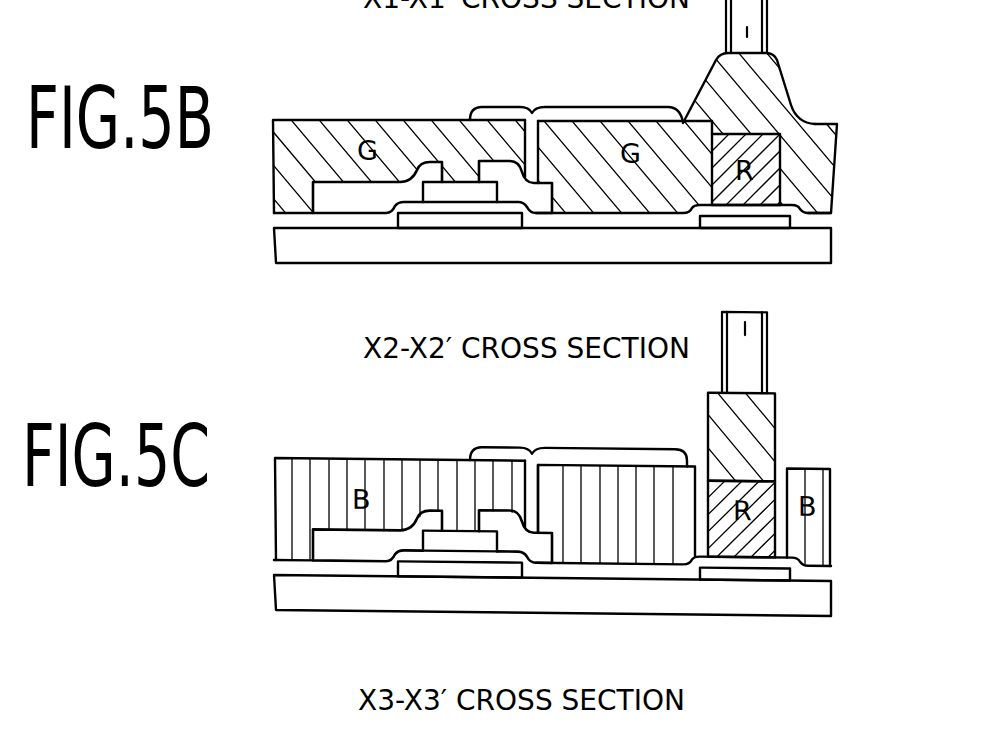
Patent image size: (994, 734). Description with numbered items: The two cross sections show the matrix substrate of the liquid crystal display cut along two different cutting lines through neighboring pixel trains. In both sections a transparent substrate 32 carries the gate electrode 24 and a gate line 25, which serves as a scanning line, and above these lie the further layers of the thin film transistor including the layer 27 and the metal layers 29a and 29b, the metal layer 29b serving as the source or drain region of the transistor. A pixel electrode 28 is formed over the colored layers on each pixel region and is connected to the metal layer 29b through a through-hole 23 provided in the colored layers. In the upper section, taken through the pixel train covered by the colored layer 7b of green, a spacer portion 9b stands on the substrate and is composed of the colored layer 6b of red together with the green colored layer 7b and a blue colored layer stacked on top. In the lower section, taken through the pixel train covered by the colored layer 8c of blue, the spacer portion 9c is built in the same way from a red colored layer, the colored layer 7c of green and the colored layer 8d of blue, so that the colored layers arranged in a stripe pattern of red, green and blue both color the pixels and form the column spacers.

In FIG. 5B, the through-hole 23 is at (535, 152).
In FIG. 5C, the through-hole 23 is at (540, 490).
In FIG. 5B, the gate electrode 24 is at (420, 222).
In FIG. 5C, the gate electrode 24 is at (420, 570).
In FIG. 5B, the gate line 25 is at (743, 226).
In FIG. 5C, the gate line 25 is at (745, 574).
In FIG. 5B, the semiconductor layer 27 is at (472, 192).
In FIG. 5C, the semiconductor layer 27 is at (472, 541).
In FIG. 5B, the pixel electrode 28 is at (497, 107).
In FIG. 5C, the pixel electrode 28 is at (495, 447).
In FIG. 5B, the source electrode 29a is at (345, 205).
In FIG. 5C, the source electrode 29a is at (345, 552).
In FIG. 5B, the metal layer 29b is at (538, 196).
In FIG. 5C, the metal layer 29b is at (538, 545).
In FIG. 5B, the transparent substrate 32 is at (820, 253).
In FIG. 5C, the transparent substrate 32 is at (820, 600).
In FIG. 5B, the colored layer of red 6b is at (782, 172).
In FIG. 5B, the colored layer of green 7b is at (772, 85).
In FIG. 5C, the colored layer of green 7c is at (770, 422).
In FIG. 5C, the colored layer of blue 8c is at (645, 472).
In FIG. 5C, the colored layer of blue 8d is at (750, 323).
In FIG. 5B, the spacer portion 9b is at (773, 24).
In FIG. 5C, the spacer portion 9c is at (770, 358).